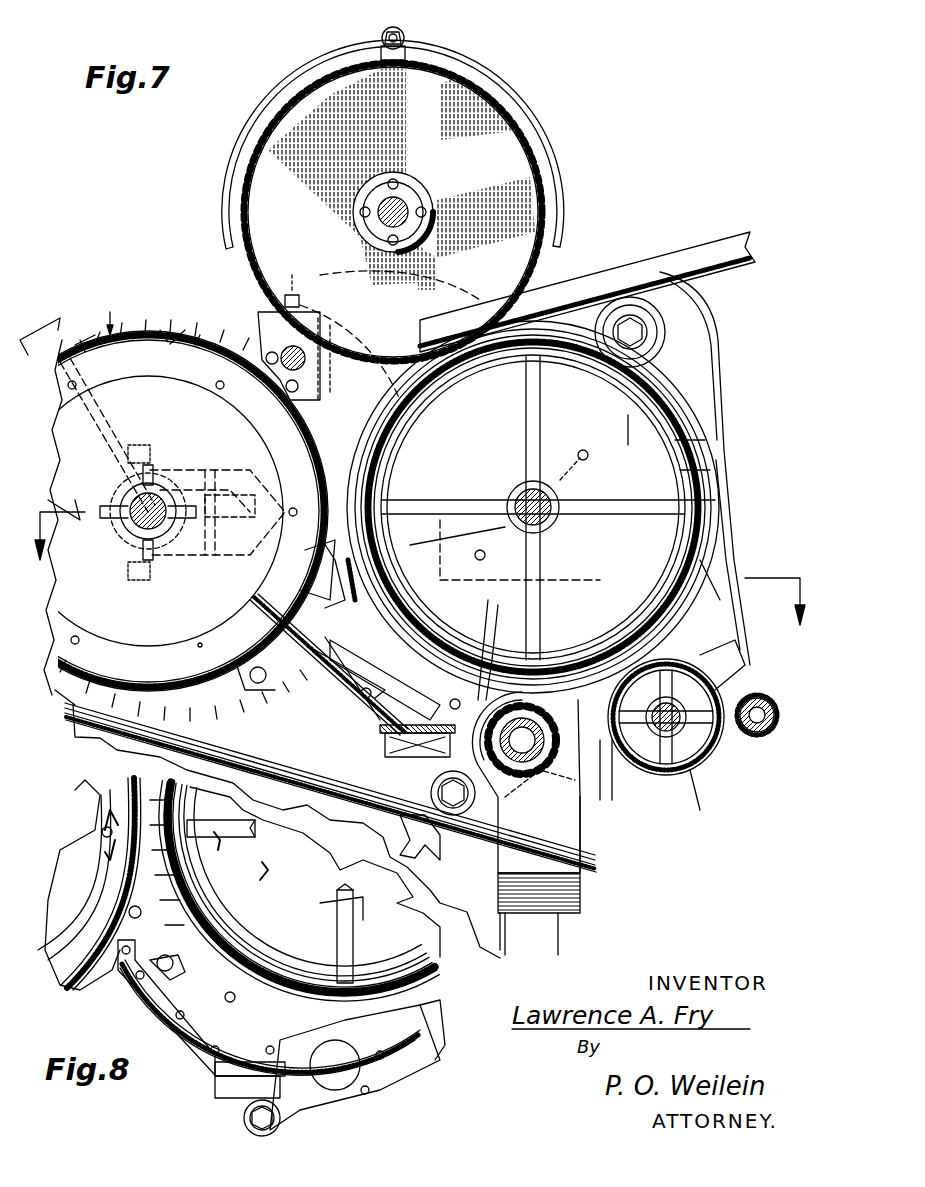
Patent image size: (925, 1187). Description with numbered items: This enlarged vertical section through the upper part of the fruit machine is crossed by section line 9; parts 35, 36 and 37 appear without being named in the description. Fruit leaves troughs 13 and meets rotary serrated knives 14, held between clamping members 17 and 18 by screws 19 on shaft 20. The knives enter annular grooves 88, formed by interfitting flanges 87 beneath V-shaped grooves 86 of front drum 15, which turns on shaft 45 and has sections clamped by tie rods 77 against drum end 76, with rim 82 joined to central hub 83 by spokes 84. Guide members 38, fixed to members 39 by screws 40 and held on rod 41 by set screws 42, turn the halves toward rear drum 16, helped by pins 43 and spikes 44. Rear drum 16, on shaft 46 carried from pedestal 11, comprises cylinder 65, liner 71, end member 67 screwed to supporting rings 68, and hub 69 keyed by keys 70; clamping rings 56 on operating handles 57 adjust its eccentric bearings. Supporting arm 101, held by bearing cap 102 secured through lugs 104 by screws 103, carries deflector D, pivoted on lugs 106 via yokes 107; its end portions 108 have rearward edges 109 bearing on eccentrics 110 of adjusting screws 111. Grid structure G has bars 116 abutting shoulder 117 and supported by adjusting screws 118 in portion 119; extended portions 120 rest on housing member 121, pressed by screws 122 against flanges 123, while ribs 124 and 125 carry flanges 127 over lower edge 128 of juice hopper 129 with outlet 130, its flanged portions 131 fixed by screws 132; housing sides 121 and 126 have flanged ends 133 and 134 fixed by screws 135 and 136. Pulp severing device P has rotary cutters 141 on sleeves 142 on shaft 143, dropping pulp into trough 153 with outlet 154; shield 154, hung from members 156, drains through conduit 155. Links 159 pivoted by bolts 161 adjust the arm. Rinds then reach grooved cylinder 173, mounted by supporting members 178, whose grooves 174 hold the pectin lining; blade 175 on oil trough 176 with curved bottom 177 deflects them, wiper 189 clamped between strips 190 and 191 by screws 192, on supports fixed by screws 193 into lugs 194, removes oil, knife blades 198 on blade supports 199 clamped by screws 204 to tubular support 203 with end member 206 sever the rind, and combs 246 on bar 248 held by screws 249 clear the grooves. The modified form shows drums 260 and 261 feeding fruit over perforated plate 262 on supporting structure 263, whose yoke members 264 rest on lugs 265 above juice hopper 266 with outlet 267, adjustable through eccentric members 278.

In FIG. 7, the section line 9 is at (424, 574).
In FIG. 7, the supporting pedestal 11 is at (712, 340).
In FIG. 7, the trough 13 is at (685, 258).
In FIG. 7, the rotary serrated knife 14 is at (505, 150).
In FIG. 7, the front drum 15 is at (700, 420).
In FIG. 7, the rear drum 16 is at (121, 306).
In FIG. 7, the clamping member 17 is at (418, 185).
In FIG. 7, the clamping member 18 is at (752, 690).
In FIG. 7, the screw 19 is at (421, 218).
In FIG. 7, the revoluble shaft 20 is at (381, 220).
In FIG. 7, the guard 35 is at (520, 107).
In FIG. 7, the bracket 36 is at (405, 34).
In FIG. 7, the pin 37 is at (382, 30).
In FIG. 7, the guide member 38 is at (335, 414).
In FIG. 7, the member 39 is at (262, 318).
In FIG. 7, the screw 40 is at (320, 325).
In FIG. 7, the rod 41 is at (308, 366).
In FIG. 7, the set screw 42 is at (289, 284).
In FIG. 7, the pin 43 is at (680, 395).
In FIG. 7, the spike 44 is at (170, 328).
In FIG. 7, the shaft 45 is at (555, 500).
In FIG. 7, the shaft 46 is at (135, 520).
In FIG. 7, the split clamping ring 56 is at (185, 490).
In FIG. 7, the operating handle 57 is at (225, 495).
In FIG. 7, the cylinder 65 is at (172, 390).
In FIG. 7, the end member 67 is at (168, 621).
In FIG. 7, the supporting ring 68 is at (200, 642).
In FIG. 7, the central hub 69 is at (132, 497).
In FIG. 7, the key 70 is at (136, 494).
In FIG. 7, the liner 71 is at (88, 335).
In FIG. 7, the drum end 76 is at (468, 474).
In FIG. 7, the tie rod 77 is at (590, 455).
In FIG. 7, the rim 82 is at (578, 660).
In FIG. 7, the central hub 83 is at (552, 525).
In FIG. 7, the spoke 84 is at (524, 403).
In FIG. 7, the V-shaped groove 86 is at (548, 322).
In FIG. 7, the interfitting flange 87 is at (400, 420).
In FIG. 7, the annular groove 88 is at (605, 322).
In FIG. 7, the supporting arm 101 is at (215, 565).
In FIG. 7, the bearing cap 102 is at (100, 508).
In FIG. 7, the screw 103 is at (128, 452).
In FIG. 7, the lug 104 is at (150, 462).
In FIG. 7, the lug 106 is at (420, 625).
In FIG. 7, the yoke 107 is at (430, 640).
In FIG. 7, the end portion 108 is at (445, 572).
In FIG. 7, the rearward edge 109 is at (303, 605).
In FIG. 7, the eccentric 110 is at (312, 565).
In FIG. 7, the adjusting screw 111 is at (305, 585).
In FIG. 7, the bar 116 is at (385, 680).
In FIG. 7, the shoulder 117 is at (445, 580).
In FIG. 7, the adjusting screw 118 is at (520, 550).
In FIG. 7, the portion 119 is at (265, 640).
In FIG. 7, the solid extended portion 120 is at (666, 717).
In FIG. 7, the housing member 121 is at (590, 790).
In FIG. 7, the adjusting screw 122 is at (550, 668).
In FIG. 7, the flange 123 is at (518, 670).
In FIG. 7, the reinforcing rib 124 is at (358, 674).
In FIG. 7, the reinforcing rib 125 is at (495, 640).
In FIG. 7, the housing member 126 is at (464, 795).
In FIG. 7, the flange 127 is at (495, 642).
In FIG. 7, the lower edge 128 is at (450, 700).
In FIG. 7, the juice collecting hopper 129 is at (375, 750).
In FIG. 7, the outlet 130 is at (660, 728).
In FIG. 7, the flanged portion 131 is at (258, 690).
In FIG. 7, the screw 132 is at (335, 700).
In FIG. 7, the flanged end 133 is at (625, 790).
In FIG. 7, the flanged end 134 is at (438, 790).
In FIG. 7, the screw 135 is at (612, 775).
In FIG. 7, the screw 136 is at (417, 741).
In FIG. 7, the rotary cutter 141 is at (490, 855).
In FIG. 7, the sleeve 142 is at (526, 765).
In FIG. 7, the revoluble shaft 143 is at (580, 850).
In FIG. 7, the trough 153 is at (580, 887).
In FIG. 7, the shield 154 is at (560, 930).
In FIG. 7, the conduit 155 is at (262, 760).
In FIG. 7, the support member 156 is at (100, 368).
In FIG. 7, the link member 159 is at (405, 835).
In FIG. 7, the bolt 161 is at (420, 848).
In FIG. 7, the grooved cylinder 173 is at (722, 750).
In FIG. 7, the peripheral groove 174 is at (718, 760).
In FIG. 7, the blade 175 is at (640, 640).
In FIG. 7, the oil collecting trough 176 is at (720, 648).
In FIG. 7, the curved bottom 177 is at (700, 680).
In FIG. 7, the supporting member 178 is at (672, 760).
In FIG. 7, the yieldable wiper 189 is at (715, 555).
In FIG. 7, the clamping strip 190 is at (722, 568).
In FIG. 7, the clamping strip 191 is at (660, 610).
In FIG. 7, the screw 192 is at (725, 600).
In FIG. 7, the screw 193 is at (725, 615).
In FIG. 7, the lug 194 is at (668, 626).
In FIG. 7, the knife blade 198 is at (725, 678).
In FIG. 7, the blade support 199 is at (758, 752).
In FIG. 7, the tubular knife support 203 is at (762, 745).
In FIG. 7, the screw 204 is at (772, 735).
In FIG. 7, the extended end member 206 is at (770, 705).
In FIG. 7, the comb 246 is at (712, 770).
In FIG. 7, the supporting bar 248 is at (698, 790).
In FIG. 7, the screw 249 is at (715, 790).
In FIG. 8, the front drum 260 is at (272, 892).
In FIG. 8, the rotary drum 261 is at (98, 806).
In FIG. 8, the perforated plate 262 is at (255, 1000).
In FIG. 8, the supporting structure 263 is at (215, 990).
In FIG. 8, the yoke member 264 is at (130, 985).
In FIG. 8, the lug 265 is at (180, 965).
In FIG. 8, the juice collecting hopper 266 is at (200, 1060).
In FIG. 8, the hopper outlet 267 is at (300, 1105).
In FIG. 8, the eccentric member 278 is at (128, 910).
In FIG. 7, the deflector D is at (451, 540).
In FIG. 7, the grid structure G is at (351, 727).
In FIG. 7, the pulp severing device P is at (526, 782).